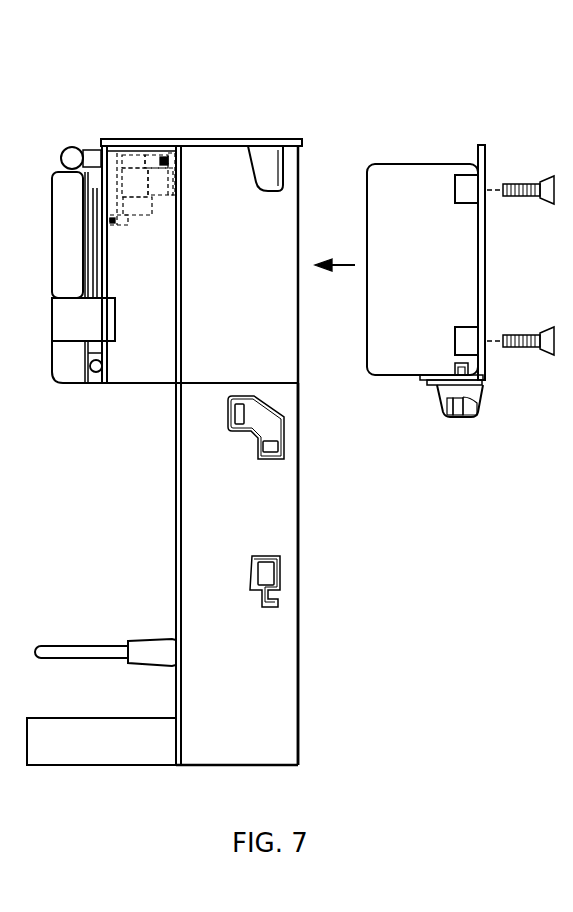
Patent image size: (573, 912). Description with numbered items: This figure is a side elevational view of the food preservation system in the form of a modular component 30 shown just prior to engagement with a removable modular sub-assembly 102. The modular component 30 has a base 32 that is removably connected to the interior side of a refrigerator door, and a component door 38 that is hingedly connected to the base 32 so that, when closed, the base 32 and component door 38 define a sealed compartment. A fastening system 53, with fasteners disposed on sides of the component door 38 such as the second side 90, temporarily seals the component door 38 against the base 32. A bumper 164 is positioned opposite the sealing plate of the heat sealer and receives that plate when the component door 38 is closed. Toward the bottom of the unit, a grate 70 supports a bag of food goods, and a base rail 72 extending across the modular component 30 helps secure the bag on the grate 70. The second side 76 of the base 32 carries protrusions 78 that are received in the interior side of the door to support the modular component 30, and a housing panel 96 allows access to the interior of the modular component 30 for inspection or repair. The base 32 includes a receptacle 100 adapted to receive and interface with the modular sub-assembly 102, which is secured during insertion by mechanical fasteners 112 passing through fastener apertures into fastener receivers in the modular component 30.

The modular component 30 is at (332, 68).
The receptacle 100 is at (264, 220).
The second side of the component door 90 is at (65, 228).
The fastening system 53 is at (70, 324).
The component door 38 is at (54, 360).
The bumper 164 is at (97, 386).
The base rail 72 is at (67, 643).
The grate 70 is at (77, 713).
The base 32 is at (287, 673).
The housing panel 96 is at (301, 702).
The second side of the base 76 is at (287, 513).
The protrusions 78 is at (283, 447).
The removable modular sub-assembly 102 is at (417, 182).
The mechanical fasteners 112 is at (504, 202).